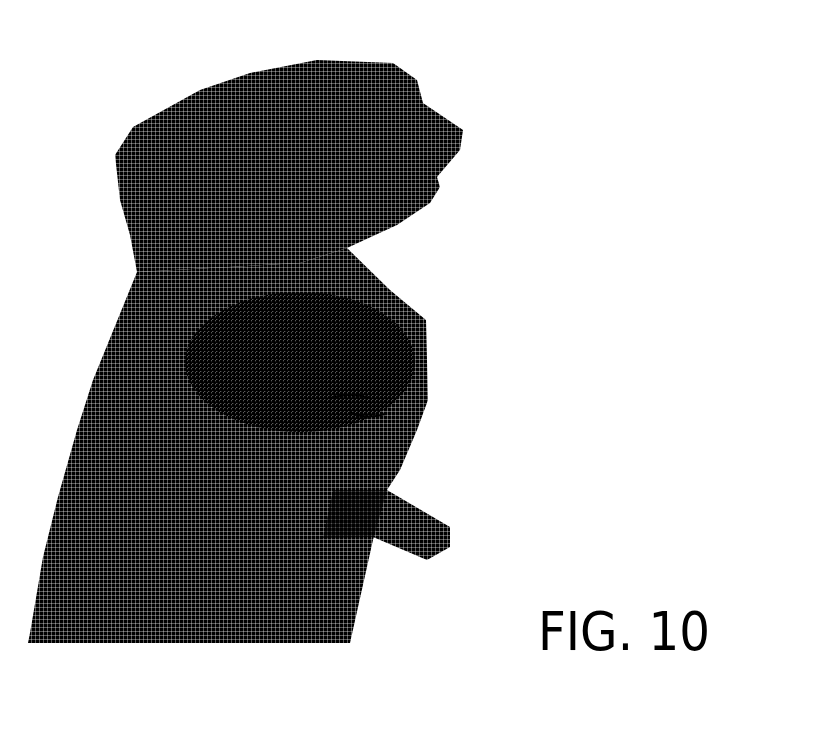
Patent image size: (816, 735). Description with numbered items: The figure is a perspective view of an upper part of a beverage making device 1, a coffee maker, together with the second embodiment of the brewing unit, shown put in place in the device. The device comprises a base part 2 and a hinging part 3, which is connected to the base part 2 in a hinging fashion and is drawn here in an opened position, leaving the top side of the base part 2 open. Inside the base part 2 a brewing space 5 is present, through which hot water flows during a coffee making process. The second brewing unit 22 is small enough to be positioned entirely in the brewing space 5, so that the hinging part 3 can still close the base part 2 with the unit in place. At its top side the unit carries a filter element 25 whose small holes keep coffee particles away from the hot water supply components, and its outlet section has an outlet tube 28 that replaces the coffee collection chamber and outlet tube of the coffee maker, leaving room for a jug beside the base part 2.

The beverage making device 1 is at (274, 328).
The base part 2 is at (333, 610).
The hinging part 3 is at (227, 104).
The brewing space 5 is at (334, 371).
The second brewing unit 22 is at (367, 412).
The filter element 25 is at (348, 400).
The outlet tube 28 is at (420, 520).